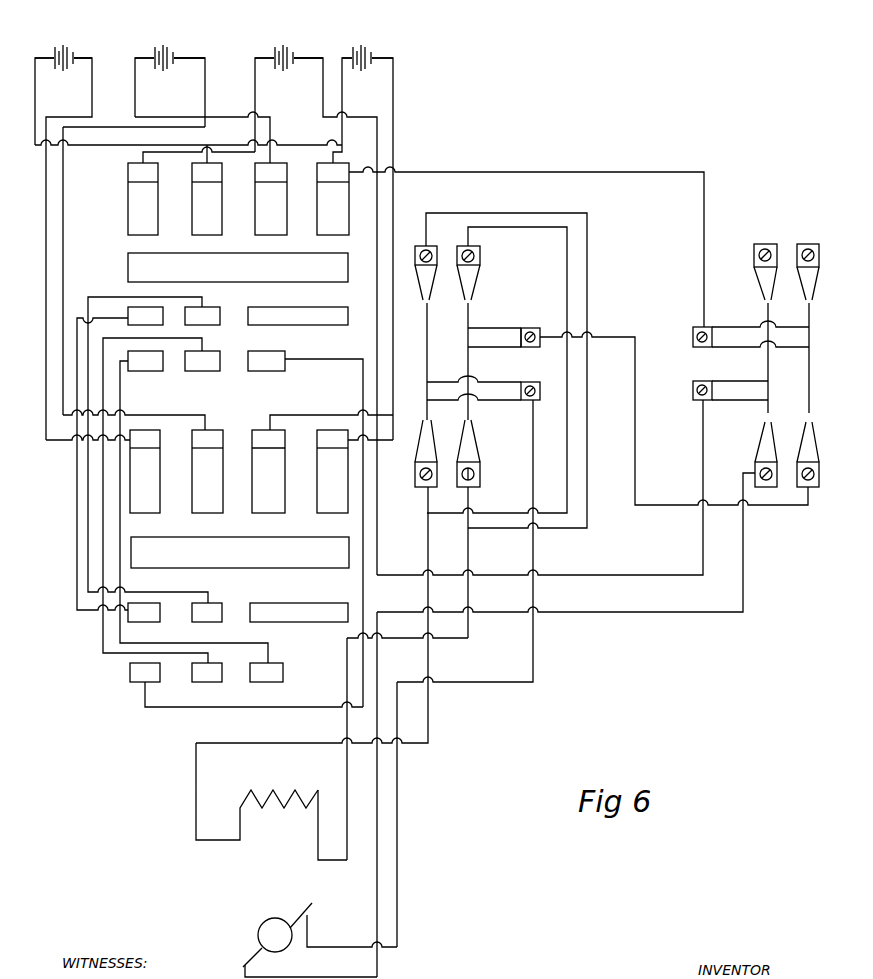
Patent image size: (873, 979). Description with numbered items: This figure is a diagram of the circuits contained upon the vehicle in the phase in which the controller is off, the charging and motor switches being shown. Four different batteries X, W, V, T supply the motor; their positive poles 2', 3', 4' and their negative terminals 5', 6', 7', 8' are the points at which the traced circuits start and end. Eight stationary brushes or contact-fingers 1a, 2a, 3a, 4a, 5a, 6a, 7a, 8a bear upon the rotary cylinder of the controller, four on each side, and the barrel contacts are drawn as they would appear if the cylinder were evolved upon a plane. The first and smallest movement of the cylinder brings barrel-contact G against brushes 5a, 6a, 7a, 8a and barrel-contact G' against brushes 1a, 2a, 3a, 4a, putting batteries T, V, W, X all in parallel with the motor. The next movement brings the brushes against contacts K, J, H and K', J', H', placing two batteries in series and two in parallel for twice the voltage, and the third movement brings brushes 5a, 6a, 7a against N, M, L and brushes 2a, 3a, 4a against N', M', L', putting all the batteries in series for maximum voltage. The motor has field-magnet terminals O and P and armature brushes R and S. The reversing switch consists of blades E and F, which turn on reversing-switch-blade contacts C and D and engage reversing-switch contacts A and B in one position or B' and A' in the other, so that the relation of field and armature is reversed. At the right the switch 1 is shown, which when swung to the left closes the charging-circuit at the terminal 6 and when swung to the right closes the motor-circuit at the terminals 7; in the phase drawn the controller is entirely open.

The battery X is at (68, 50).
The battery W is at (170, 52).
The battery V is at (275, 37).
The battery T is at (367, 51).
The battery-positive pole 4' is at (86, 45).
The battery-positive pole 3' is at (189, 47).
The battery-positive pole 2' is at (308, 43).
The battery-negative terminal 8' is at (63, 249).
The battery-negative terminal 7' is at (202, 110).
The battery-negative terminal 6' is at (316, 316).
The battery-negative terminal 5' is at (363, 249).
The contact-finger 5a is at (143, 199).
The contact-finger 6a is at (207, 199).
The contact-finger 7a is at (271, 199).
The contact-finger 8a is at (333, 199).
The barrel-contact G is at (238, 267).
The controller-barrel contact K is at (120, 458).
The controller-barrel contact J is at (154, 450).
The controller-barrel contact H is at (298, 316).
The controller-barrel contact N is at (194, 507).
The controller-barrel contact M is at (161, 500).
The controller-barrel contact L is at (305, 529).
The contact-finger 4a is at (145, 471).
The contact-finger 3a is at (207, 471).
The contact-finger 2a is at (268, 471).
The contact-finger 1a is at (332, 471).
The barrel-contact G' is at (240, 552).
The controller-barrel contact K' is at (144, 612).
The controller-barrel contact J' is at (207, 612).
The controller-barrel contact H' is at (299, 612).
The controller-barrel contact N' is at (246, 685).
The controller-barrel contact M' is at (207, 672).
The controller-barrel contact L' is at (266, 672).
The reversing-switch contact A is at (501, 370).
The reversing-switch contact B is at (497, 370).
The reversing-switch contact A' is at (478, 529).
The reversing-switch contact B' is at (419, 465).
The reversing-switch-blade contact C is at (489, 398).
The reversing-switch-blade contact D is at (664, 406).
The reversing-switch blade E is at (414, 361).
The reversing-switch blade F is at (483, 338).
The switch 1 is at (799, 359).
The charging-circuit terminal 6 is at (787, 454).
The motor-circuit terminals 7 is at (786, 275).
The motor-field terminal O is at (257, 802).
The motor-field terminal P is at (332, 825).
The armature-terminal R is at (257, 942).
The armature-terminal S is at (305, 904).